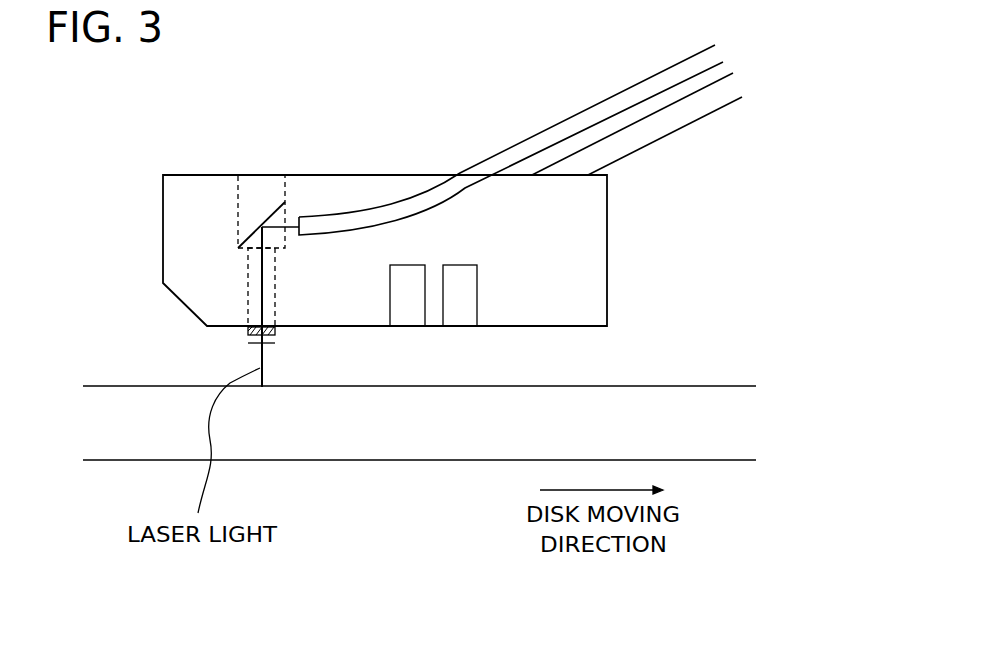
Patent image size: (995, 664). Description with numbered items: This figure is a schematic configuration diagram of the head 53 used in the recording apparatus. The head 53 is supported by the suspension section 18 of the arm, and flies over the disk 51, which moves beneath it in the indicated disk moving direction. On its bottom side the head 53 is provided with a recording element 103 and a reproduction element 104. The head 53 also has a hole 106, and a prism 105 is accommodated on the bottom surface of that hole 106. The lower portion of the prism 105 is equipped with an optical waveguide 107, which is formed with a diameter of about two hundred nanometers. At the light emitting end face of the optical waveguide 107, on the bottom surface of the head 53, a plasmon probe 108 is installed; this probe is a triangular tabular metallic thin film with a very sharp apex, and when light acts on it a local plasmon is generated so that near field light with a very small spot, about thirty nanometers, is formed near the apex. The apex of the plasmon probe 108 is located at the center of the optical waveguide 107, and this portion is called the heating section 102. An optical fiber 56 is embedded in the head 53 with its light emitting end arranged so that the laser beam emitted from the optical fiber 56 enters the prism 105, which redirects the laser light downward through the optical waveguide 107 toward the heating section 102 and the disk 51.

The suspension section 18 is at (710, 100).
The magnetic disk 51 is at (338, 462).
The head 53 is at (588, 248).
The optical fiber 56 is at (574, 128).
The heating section 102 is at (257, 345).
The recording element 103 is at (407, 317).
The reproduction element 104 is at (460, 320).
The prism 105 is at (270, 216).
The hole 106 is at (240, 207).
The optical waveguide 107 is at (252, 280).
The plasmon probe 108 is at (277, 332).